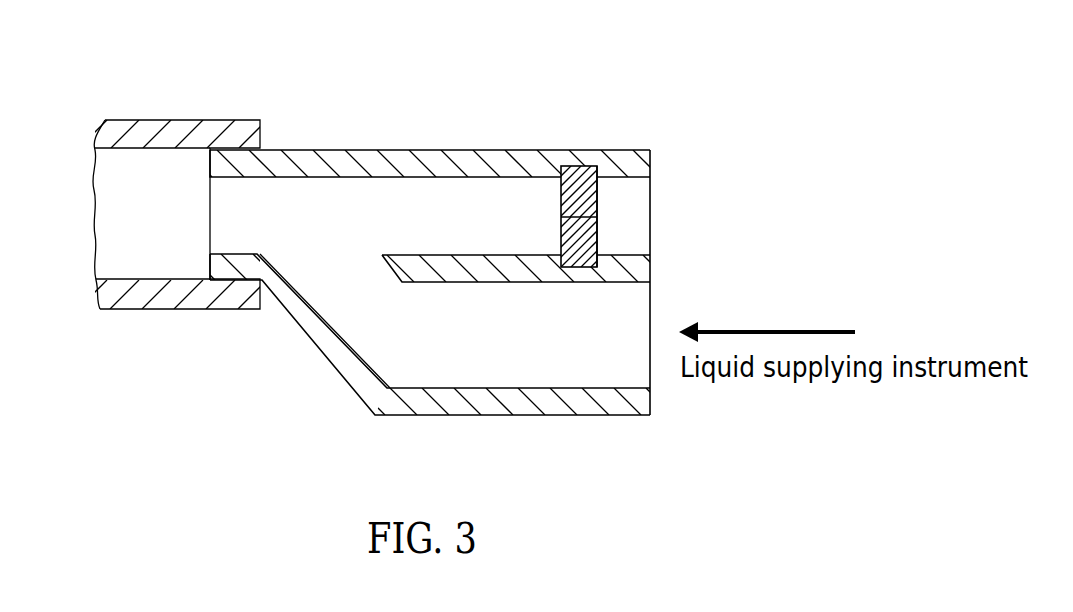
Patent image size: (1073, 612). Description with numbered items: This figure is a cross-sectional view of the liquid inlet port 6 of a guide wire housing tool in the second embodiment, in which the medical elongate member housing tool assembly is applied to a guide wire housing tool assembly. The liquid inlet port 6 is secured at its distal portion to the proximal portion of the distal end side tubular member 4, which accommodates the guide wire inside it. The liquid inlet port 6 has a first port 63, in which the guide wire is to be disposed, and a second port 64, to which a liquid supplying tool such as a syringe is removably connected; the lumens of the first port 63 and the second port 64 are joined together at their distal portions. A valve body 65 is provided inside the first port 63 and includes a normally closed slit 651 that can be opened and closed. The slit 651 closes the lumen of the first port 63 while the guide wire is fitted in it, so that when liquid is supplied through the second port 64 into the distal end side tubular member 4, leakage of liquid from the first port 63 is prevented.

The distal end side tubular member 4 is at (148, 132).
The liquid inlet port 6 is at (492, 72).
The first port 63 is at (520, 195).
The second port 64 is at (502, 338).
The valve body 65 is at (577, 179).
The normally closed slit 651 is at (597, 204).